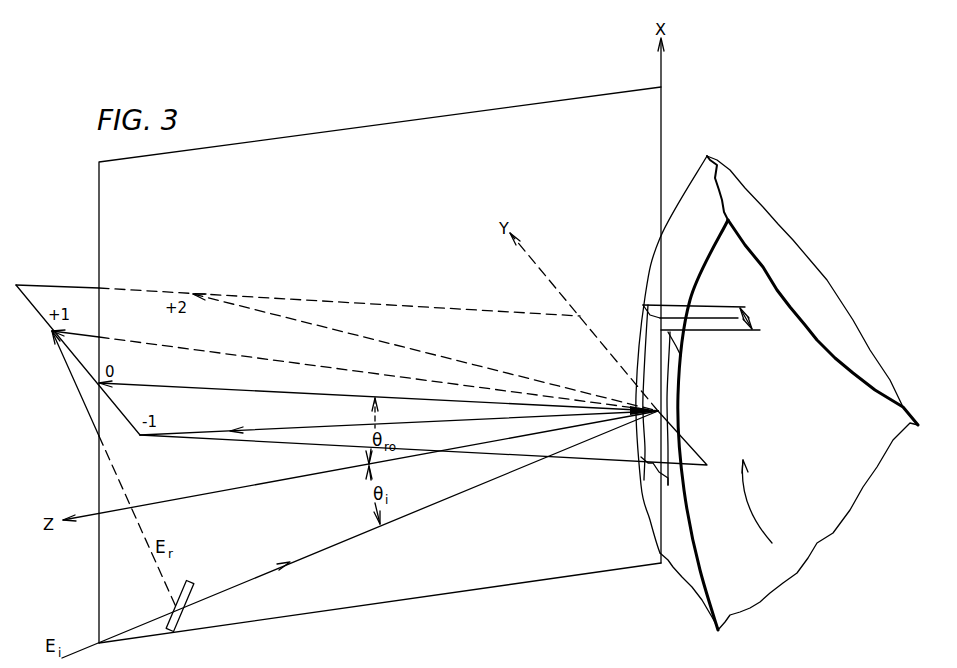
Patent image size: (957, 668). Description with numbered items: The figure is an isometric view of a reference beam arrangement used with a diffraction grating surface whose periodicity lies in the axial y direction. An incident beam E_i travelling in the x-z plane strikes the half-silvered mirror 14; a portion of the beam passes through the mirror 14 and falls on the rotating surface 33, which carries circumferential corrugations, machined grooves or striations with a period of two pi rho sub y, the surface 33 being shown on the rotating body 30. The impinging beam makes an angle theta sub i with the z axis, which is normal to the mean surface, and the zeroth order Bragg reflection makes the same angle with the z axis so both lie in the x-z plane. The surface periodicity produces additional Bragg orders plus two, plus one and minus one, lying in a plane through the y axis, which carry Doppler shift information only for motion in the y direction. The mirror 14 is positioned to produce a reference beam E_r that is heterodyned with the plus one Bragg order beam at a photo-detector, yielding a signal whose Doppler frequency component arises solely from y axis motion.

The half-silvered mirror 14 is at (196, 588).
The rotating disk 30 is at (802, 394).
The rotating surface 33 is at (643, 457).